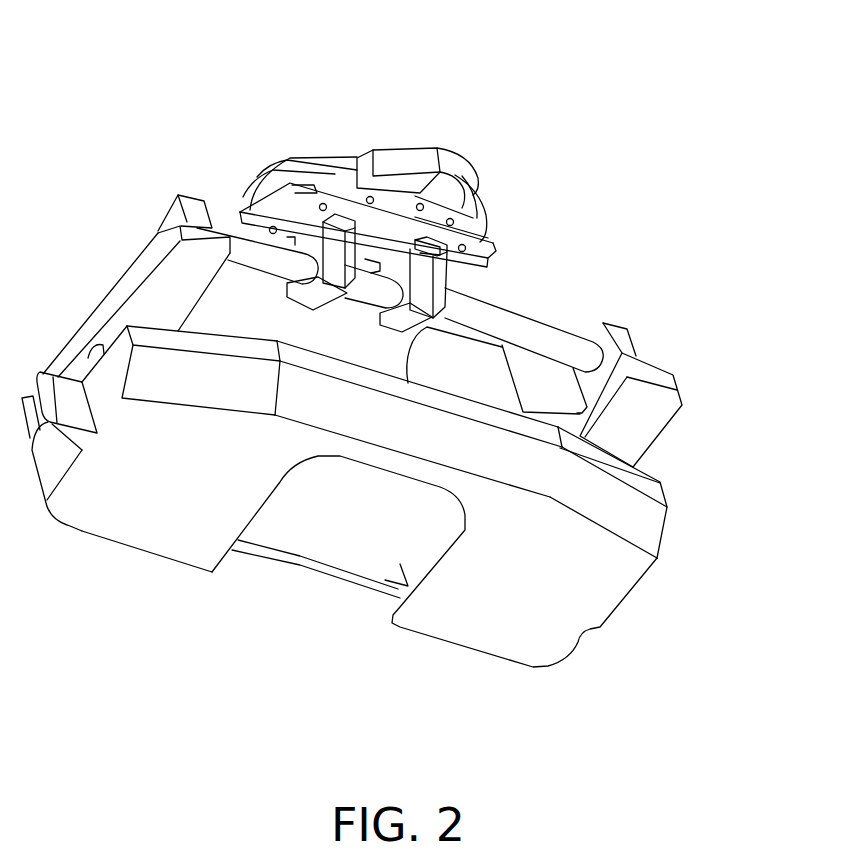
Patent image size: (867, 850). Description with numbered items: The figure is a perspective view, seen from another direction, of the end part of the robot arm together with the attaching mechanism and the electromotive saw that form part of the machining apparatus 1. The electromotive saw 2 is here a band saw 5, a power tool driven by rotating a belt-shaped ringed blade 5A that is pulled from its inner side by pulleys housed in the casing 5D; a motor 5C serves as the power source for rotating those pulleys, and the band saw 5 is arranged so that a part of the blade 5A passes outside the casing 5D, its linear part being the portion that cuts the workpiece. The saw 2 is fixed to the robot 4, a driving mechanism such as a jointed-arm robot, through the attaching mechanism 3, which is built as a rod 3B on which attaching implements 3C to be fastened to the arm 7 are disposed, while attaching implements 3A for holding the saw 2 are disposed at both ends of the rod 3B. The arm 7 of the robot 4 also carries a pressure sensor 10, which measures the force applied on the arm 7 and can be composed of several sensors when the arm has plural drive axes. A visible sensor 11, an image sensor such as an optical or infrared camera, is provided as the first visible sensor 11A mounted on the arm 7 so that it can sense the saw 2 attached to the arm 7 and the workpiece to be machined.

The machining apparatus 1 is at (676, 92).
The electromotive saw 2 is at (674, 536).
The attaching mechanism 3 is at (692, 258).
The attaching implements 3A is at (618, 323).
The rod 3B is at (563, 337).
The attaching implements 3C is at (427, 310).
The robot 4 is at (498, 162).
The band saw 5 is at (494, 668).
The blade 5A is at (309, 572).
The motor 5C is at (407, 360).
The casing 5D is at (116, 545).
The arm 7 is at (268, 158).
The pressure sensor 10 is at (225, 177).
The visible sensor 11 is at (478, 220).
The first visible sensor 11A is at (440, 187).